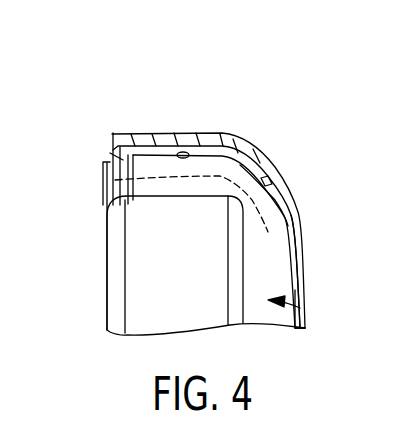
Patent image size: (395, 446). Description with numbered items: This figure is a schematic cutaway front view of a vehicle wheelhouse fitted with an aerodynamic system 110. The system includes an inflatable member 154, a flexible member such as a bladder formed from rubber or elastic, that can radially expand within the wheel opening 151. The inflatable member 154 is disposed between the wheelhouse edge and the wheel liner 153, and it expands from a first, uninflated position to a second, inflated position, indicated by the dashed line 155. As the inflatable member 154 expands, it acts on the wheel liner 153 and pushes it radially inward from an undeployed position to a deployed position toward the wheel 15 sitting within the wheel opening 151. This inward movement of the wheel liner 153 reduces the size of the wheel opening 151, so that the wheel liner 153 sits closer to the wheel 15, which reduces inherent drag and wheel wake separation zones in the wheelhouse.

The aerodynamic system 110 is at (115, 110).
The wheel 15 is at (141, 289).
The wheel opening 151 is at (297, 308).
The wheel liner 153 is at (293, 262).
The inflatable member 154 is at (237, 157).
The dashed line 155 is at (197, 214).